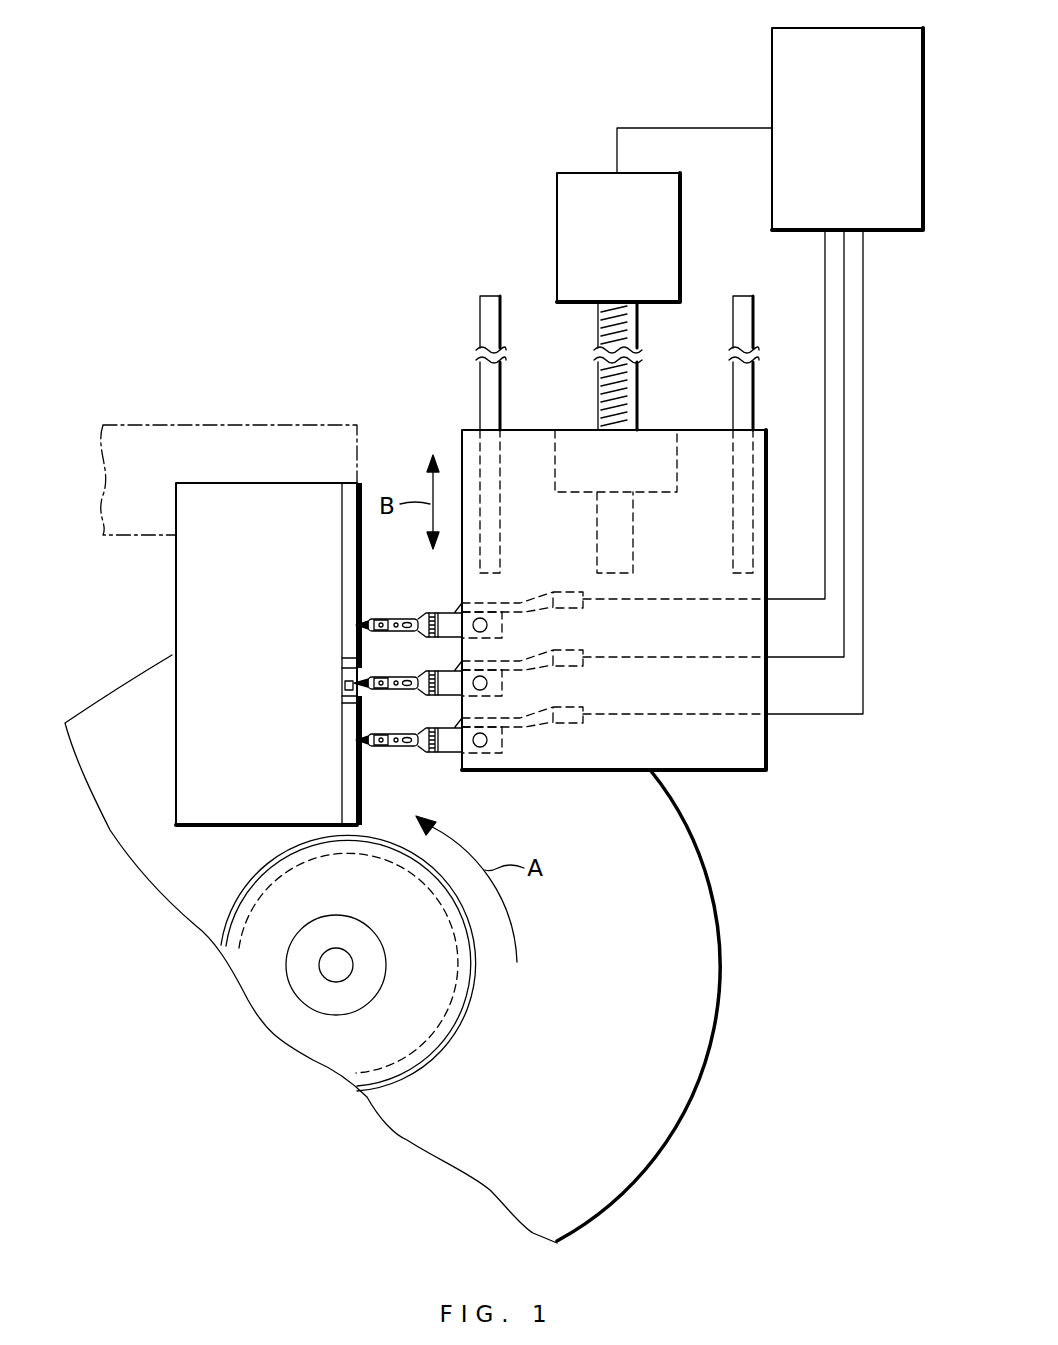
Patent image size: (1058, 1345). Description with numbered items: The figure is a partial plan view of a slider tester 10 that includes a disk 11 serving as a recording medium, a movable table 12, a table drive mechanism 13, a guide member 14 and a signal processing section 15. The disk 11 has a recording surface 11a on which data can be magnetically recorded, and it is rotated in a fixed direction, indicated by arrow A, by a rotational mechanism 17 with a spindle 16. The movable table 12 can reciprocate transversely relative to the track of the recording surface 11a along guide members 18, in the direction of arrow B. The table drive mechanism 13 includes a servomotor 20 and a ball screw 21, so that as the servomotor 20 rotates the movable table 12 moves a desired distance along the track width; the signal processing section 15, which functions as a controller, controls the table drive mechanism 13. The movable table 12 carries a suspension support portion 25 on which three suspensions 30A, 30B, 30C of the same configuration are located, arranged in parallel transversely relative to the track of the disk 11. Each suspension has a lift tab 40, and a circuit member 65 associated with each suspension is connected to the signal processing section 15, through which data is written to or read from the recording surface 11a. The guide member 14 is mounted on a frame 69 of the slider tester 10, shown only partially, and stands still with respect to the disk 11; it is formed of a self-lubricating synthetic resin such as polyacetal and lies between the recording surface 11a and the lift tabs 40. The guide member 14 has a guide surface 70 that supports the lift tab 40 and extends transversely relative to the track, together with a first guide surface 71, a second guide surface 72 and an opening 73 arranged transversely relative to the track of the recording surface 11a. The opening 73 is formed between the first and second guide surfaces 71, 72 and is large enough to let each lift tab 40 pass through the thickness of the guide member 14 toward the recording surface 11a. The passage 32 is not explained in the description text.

The slider tester 10 is at (350, 190).
The disk 11 is at (698, 970).
The recording surface 11a is at (583, 1051).
The movable table 12 is at (752, 748).
The table drive mechanism 13 is at (570, 160).
The guide member 14 is at (244, 489).
The signal processing section 15 is at (786, 52).
The spindle 16 is at (307, 980).
The rotational mechanism 17 is at (382, 1070).
The guide members 18 is at (480, 329).
The servomotor 20 is at (570, 229).
The ball screw 21 is at (598, 329).
The suspension support portion 25 is at (492, 771).
The suspension 30A is at (400, 746).
The suspension 30B is at (401, 677).
The suspension 30C is at (401, 616).
The flow passage 32 is at (488, 627).
The lift tab 40 is at (356, 622).
The circuit member 65 is at (573, 590).
The frame 69 is at (155, 540).
The guide surface 70 is at (350, 571).
The first guide surface 71 is at (346, 662).
The second guide surface 72 is at (348, 700).
The opening 73 is at (345, 688).